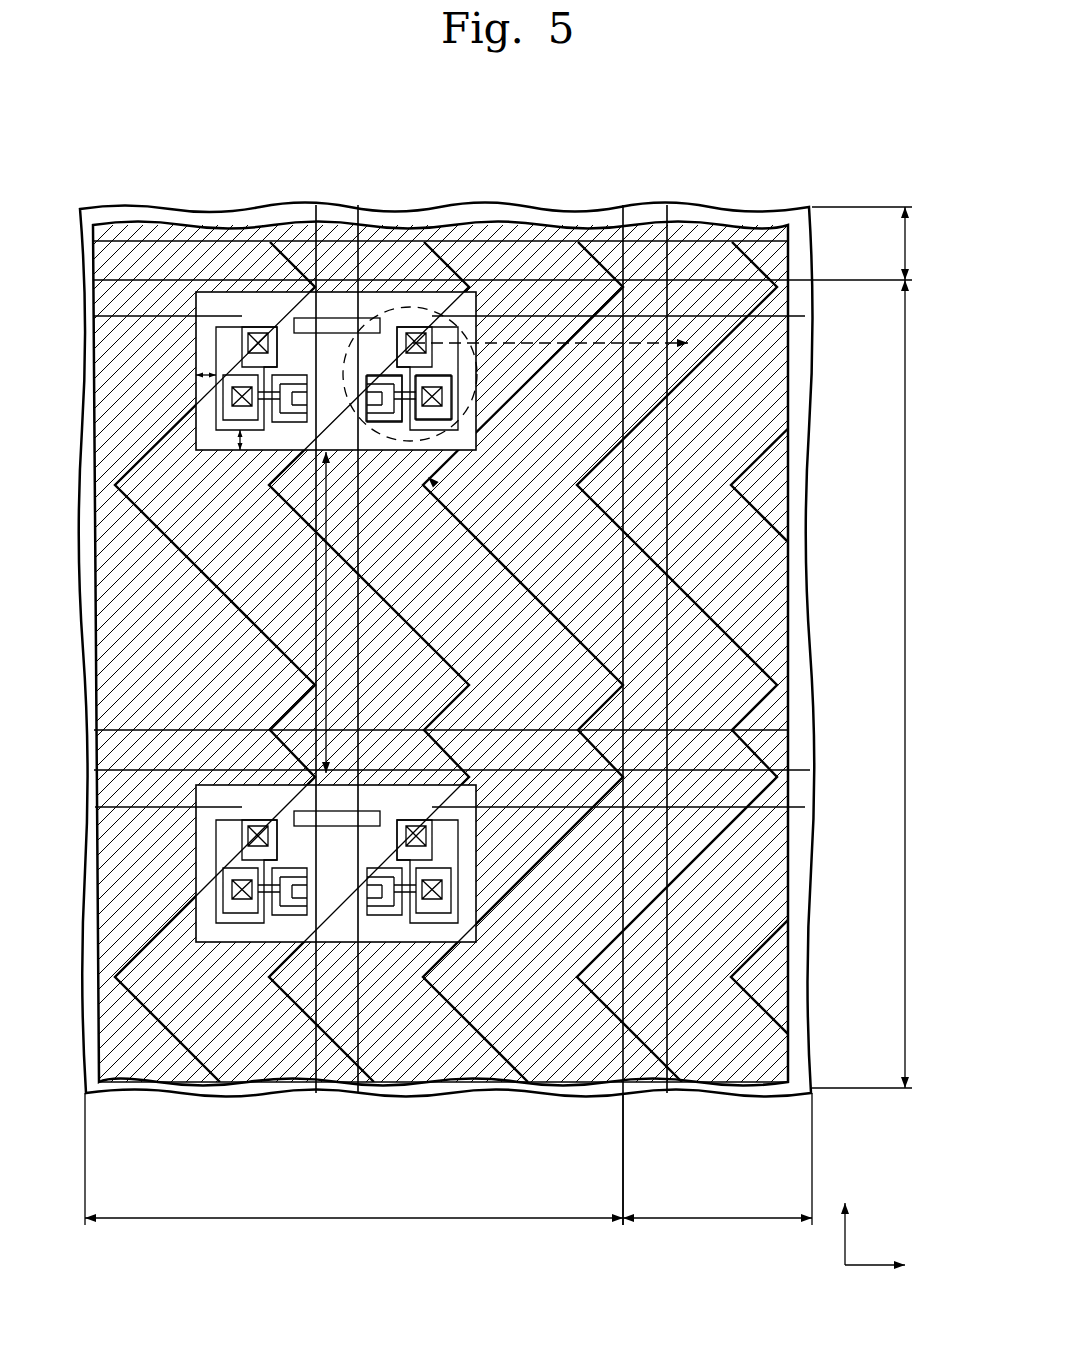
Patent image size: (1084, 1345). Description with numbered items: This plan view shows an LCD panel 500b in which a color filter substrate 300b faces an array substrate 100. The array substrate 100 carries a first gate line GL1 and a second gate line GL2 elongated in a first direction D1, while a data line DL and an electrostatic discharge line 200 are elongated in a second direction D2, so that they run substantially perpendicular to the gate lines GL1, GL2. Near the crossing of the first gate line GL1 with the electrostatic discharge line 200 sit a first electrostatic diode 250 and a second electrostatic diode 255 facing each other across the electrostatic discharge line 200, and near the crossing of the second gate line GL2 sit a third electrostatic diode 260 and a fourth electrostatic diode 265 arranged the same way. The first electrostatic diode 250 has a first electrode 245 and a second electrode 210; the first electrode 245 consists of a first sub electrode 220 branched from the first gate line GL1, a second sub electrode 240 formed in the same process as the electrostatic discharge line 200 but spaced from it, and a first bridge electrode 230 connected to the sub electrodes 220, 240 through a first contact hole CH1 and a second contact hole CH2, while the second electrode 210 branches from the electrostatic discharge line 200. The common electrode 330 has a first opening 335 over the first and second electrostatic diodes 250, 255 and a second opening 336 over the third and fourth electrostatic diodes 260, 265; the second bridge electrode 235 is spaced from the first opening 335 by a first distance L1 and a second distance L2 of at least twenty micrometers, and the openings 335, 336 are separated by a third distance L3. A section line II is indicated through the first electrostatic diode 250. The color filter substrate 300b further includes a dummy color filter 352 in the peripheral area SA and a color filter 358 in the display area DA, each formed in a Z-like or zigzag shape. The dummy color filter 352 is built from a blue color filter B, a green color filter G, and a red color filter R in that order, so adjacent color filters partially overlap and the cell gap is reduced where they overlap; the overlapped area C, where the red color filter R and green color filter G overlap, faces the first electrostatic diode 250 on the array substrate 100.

The LCD panel 500b is at (449, 595).
The array substrate 100 is at (718, 208).
The color filter substrate 300b is at (715, 128).
The common electrode 330 is at (193, 250).
The first opening 335 is at (250, 292).
The second opening 336 is at (236, 785).
The electrostatic discharge line 200 is at (333, 238).
The data line DL is at (645, 208).
The first gate line GL1 is at (812, 286).
The second gate line GL2 is at (812, 778).
The overlapped area C is at (402, 297).
The first contact hole CH1 is at (477, 397).
The second contact hole CH2 is at (440, 330).
The section line II-II' II is at (559, 414).
The first distance L1 is at (206, 366).
The second distance L2 is at (254, 442).
The third distance L3 is at (338, 612).
The second electrode 210 is at (383, 448).
The first sub electrode 220 is at (420, 447).
The first bridge electrode 230 is at (440, 445).
The second sub electrode 240 is at (462, 440).
The first electrode 245 is at (490, 475).
The first electrostatic diode 250 is at (468, 469).
The second bridge electrode 235 is at (222, 430).
The second electrostatic diode 255 is at (240, 422).
The third electrostatic diode 260 is at (394, 930).
The fourth electrostatic diode 265 is at (283, 929).
The blue color filter B is at (140, 1052).
The green color filter G is at (255, 1053).
The red color filter R is at (469, 1102).
The dummy color filter 352 is at (361, 1120).
The color filter 358 is at (730, 1050).
The peripheral area SA is at (512, 716).
The display area DA is at (782, 752).
The first direction D1 is at (892, 1267).
The second direction D2 is at (845, 1222).